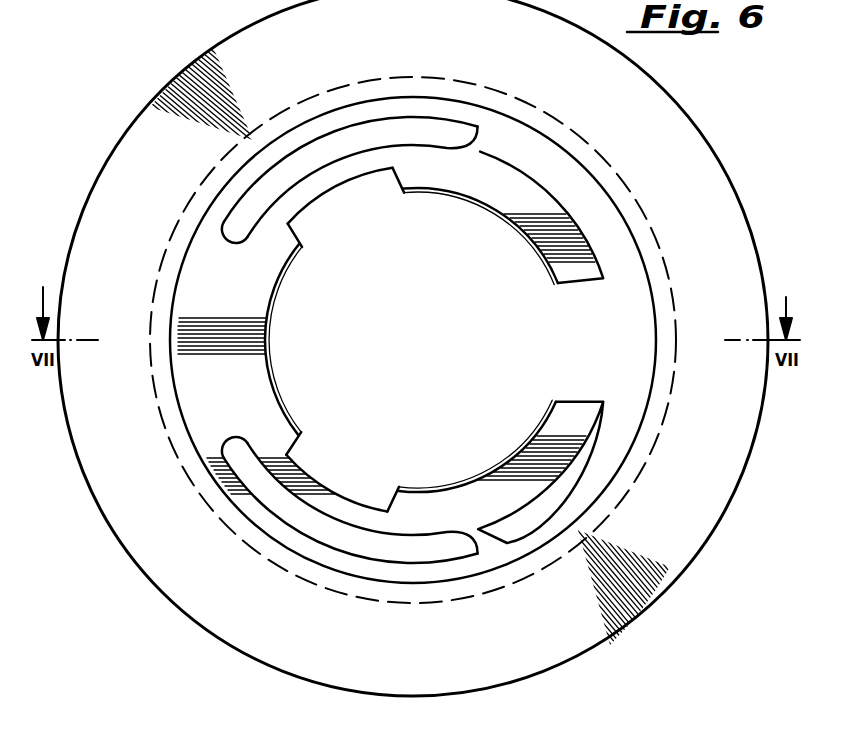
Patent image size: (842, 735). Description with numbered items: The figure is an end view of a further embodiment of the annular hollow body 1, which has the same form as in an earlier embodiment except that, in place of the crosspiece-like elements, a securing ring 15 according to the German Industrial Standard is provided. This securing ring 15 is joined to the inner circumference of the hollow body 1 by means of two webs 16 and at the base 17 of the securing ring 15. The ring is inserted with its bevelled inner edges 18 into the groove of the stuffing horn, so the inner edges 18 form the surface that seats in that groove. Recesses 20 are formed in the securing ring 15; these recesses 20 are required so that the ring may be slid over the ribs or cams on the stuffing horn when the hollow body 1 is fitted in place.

The annular hollow body 1 is at (648, 624).
The securing ring 15 is at (302, 264).
The webs 16 is at (486, 134).
The base 17 is at (264, 391).
The bevelled inner edges 18 is at (268, 292).
The recesses 20 is at (336, 191).